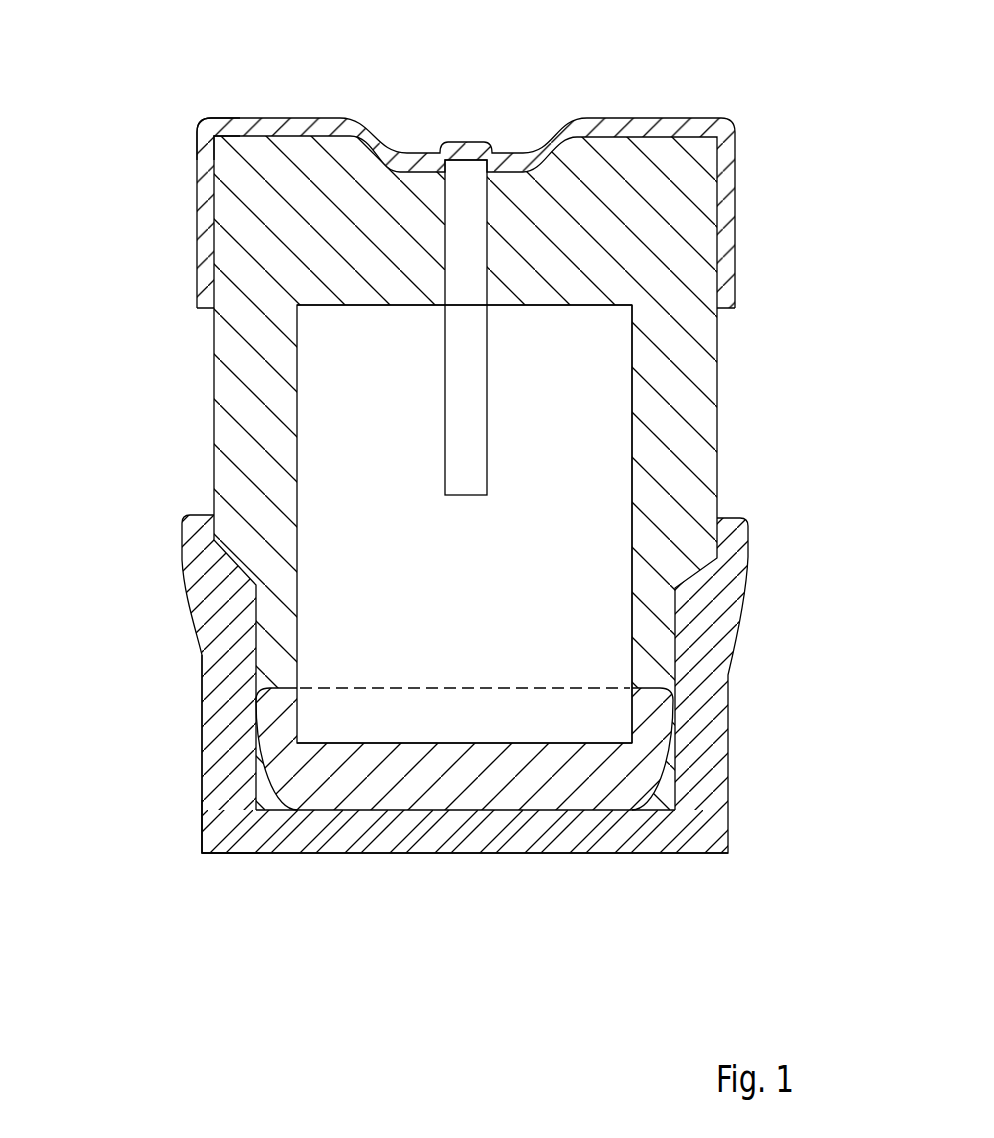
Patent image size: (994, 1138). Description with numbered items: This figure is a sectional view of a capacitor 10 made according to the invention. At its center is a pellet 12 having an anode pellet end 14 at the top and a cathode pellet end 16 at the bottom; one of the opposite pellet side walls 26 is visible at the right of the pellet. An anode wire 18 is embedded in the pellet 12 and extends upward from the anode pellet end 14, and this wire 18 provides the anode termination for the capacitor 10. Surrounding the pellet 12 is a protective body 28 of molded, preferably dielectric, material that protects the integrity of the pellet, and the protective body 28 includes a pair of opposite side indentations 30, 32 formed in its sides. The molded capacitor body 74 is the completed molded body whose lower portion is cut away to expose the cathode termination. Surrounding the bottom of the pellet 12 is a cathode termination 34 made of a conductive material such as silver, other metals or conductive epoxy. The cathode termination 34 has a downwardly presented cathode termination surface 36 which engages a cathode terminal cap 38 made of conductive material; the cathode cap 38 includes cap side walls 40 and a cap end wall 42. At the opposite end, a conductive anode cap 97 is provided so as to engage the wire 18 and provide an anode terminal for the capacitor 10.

The capacitor 10 is at (470, 487).
The pellet 12 is at (294, 405).
The anode pellet end 14 is at (368, 301).
The cathode pellet end 16 is at (523, 754).
The anode wire 18 is at (469, 156).
The pellet side wall 26 is at (636, 400).
The protective body 28 is at (251, 215).
The side indentation 30 is at (252, 640).
The side indentation 32 is at (679, 613).
The cathode termination 34 is at (624, 765).
The cathode termination surface 36 is at (609, 817).
The cathode terminal cap 38 is at (203, 857).
The cap side walls 40 is at (201, 700).
The cap end wall 42 is at (409, 857).
The capacitor body 74 is at (212, 132).
The conductive anode cap 97 is at (631, 117).